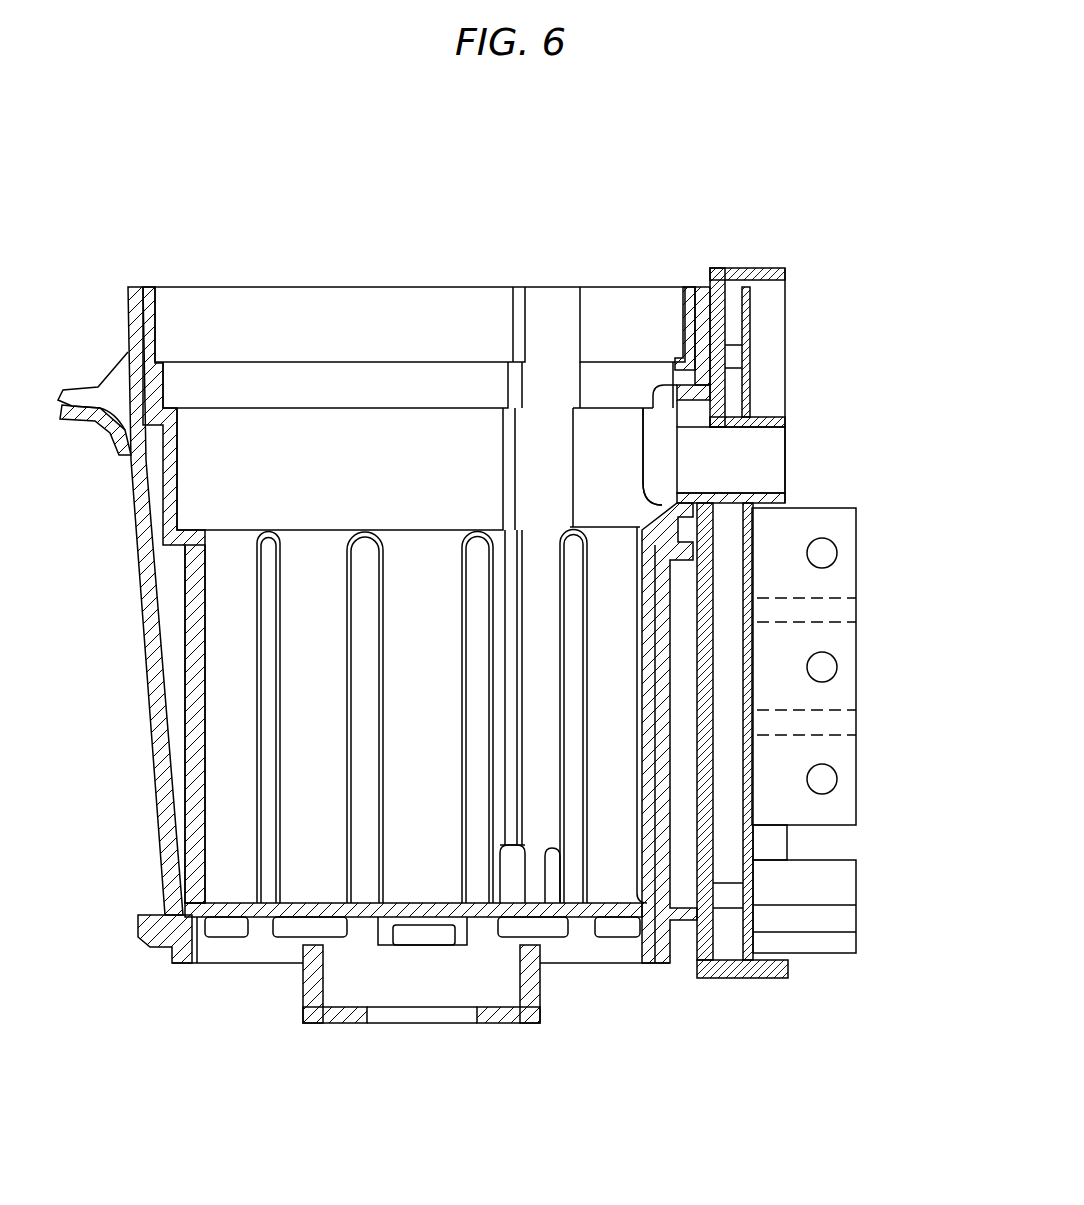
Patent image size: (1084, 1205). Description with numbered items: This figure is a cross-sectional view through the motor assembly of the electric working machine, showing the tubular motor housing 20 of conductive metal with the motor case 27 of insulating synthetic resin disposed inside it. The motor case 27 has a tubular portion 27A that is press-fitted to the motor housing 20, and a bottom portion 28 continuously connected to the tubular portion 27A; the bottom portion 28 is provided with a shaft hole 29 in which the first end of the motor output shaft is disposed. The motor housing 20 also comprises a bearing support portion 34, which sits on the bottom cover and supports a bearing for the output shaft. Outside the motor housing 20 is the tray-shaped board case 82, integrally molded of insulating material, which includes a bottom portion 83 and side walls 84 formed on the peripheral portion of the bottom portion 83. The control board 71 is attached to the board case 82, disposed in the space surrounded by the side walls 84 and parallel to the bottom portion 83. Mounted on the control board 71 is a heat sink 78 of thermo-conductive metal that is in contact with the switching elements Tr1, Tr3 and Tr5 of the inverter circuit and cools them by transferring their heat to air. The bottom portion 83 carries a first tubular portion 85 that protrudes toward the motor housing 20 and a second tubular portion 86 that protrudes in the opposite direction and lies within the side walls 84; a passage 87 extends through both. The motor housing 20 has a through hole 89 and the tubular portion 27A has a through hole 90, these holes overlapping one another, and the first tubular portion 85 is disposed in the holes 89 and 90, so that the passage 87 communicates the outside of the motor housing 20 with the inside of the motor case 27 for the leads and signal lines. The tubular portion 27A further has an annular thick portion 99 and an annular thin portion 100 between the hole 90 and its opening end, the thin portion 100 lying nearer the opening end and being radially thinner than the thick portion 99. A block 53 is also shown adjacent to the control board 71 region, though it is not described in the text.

The motor housing 20 is at (138, 693).
The motor case 27 is at (178, 740).
The tubular portion 27A is at (193, 603).
The bottom portion 28 is at (233, 908).
The shaft hole 29 is at (320, 910).
The bearing support portion 34 is at (508, 1020).
The connector block 53 is at (843, 943).
The control board 71 is at (748, 328).
The heat sink 78 is at (845, 667).
The board case 82 is at (822, 322).
The bottom portion 83 is at (705, 688).
The side walls 84 is at (727, 978).
The first tubular portion 85 is at (677, 385).
The second tubular portion 86 is at (763, 417).
The passage 87 is at (770, 458).
The through hole 89 is at (688, 529).
The through hole 90 is at (662, 497).
The thick portion 99 is at (660, 365).
The thin portion 100 is at (688, 320).
The switching element Tr1 is at (838, 584).
The switching element Tr3 is at (838, 652).
The switching element Tr5 is at (838, 813).